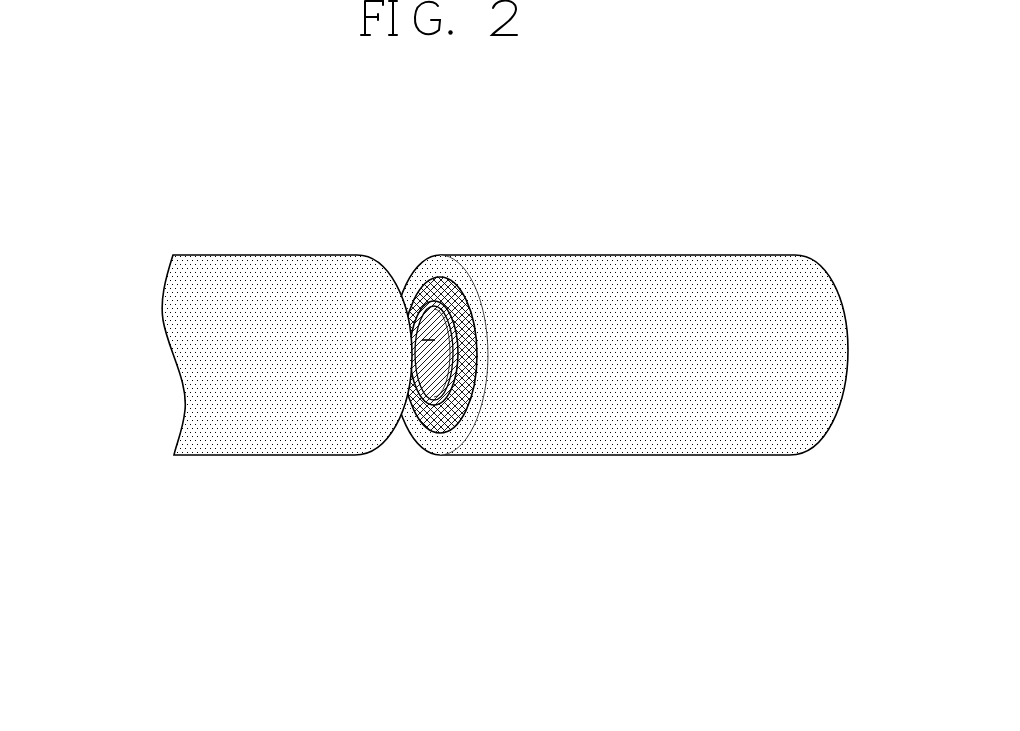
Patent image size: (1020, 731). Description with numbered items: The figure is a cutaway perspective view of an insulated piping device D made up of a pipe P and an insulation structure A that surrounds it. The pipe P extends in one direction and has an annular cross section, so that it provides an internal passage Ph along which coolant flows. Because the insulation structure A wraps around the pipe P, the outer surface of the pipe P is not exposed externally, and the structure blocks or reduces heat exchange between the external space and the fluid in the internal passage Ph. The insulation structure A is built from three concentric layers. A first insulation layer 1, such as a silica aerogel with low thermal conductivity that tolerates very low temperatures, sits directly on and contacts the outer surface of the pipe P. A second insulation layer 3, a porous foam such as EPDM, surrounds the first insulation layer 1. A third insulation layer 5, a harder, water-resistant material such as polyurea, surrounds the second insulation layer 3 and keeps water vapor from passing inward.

The insulated piping device D is at (785, 172).
The pipe P is at (412, 410).
The internal passage Ph is at (430, 340).
The first insulation layer 1 is at (423, 407).
The second insulation layer 3 is at (435, 408).
The third insulation layer 5 is at (465, 420).
The insulation structure A is at (454, 394).